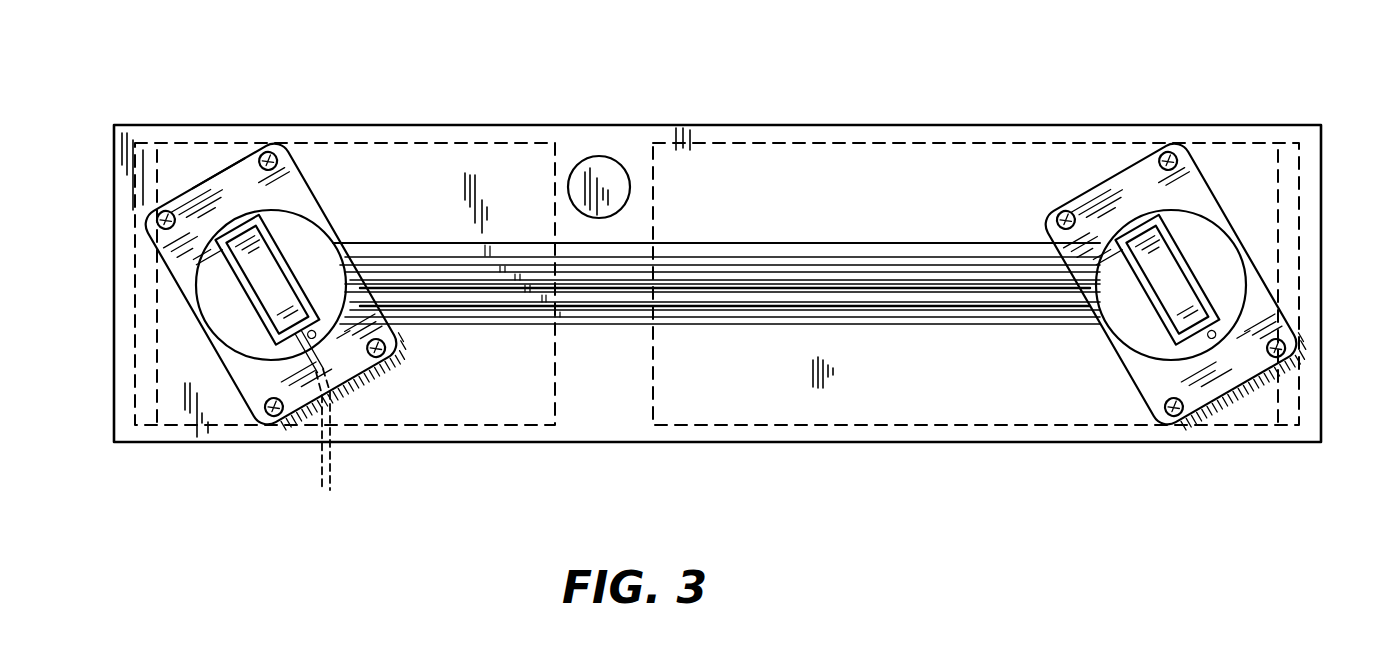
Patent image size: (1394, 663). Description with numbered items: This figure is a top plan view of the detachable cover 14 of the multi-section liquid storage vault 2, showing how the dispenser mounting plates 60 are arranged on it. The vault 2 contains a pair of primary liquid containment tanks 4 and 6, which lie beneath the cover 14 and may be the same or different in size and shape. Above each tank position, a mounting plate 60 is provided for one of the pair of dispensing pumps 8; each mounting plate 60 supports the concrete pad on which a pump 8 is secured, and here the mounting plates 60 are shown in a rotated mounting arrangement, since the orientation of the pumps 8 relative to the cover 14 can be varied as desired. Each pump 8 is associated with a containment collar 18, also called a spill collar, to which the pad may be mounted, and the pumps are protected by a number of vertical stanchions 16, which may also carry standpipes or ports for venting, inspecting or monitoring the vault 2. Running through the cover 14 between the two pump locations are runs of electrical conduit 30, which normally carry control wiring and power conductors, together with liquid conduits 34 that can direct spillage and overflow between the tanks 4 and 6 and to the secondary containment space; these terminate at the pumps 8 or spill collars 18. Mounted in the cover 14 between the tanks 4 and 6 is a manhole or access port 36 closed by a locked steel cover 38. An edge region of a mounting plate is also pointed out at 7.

The vault 2 is at (1042, 71).
The liquid containment tank 4 is at (365, 145).
The liquid containment tank 6 is at (823, 145).
The mounting plate edge 7 is at (230, 160).
The dispensing pump 8 is at (222, 252).
The detachable cover 14 is at (423, 125).
The vertical stanchion 16 is at (272, 156).
The containment collar 18 is at (197, 308).
The electrical conduit 30 is at (800, 243).
The liquid conduit 34 is at (923, 305).
The access port 36 is at (592, 158).
The locked steel cover 38 is at (605, 188).
The mounting plate 60 is at (210, 287).